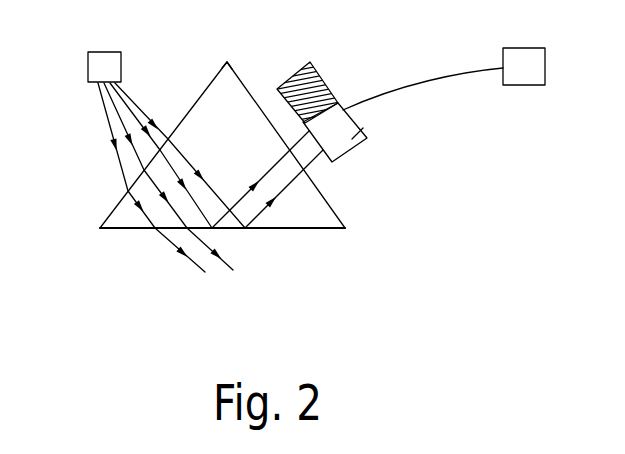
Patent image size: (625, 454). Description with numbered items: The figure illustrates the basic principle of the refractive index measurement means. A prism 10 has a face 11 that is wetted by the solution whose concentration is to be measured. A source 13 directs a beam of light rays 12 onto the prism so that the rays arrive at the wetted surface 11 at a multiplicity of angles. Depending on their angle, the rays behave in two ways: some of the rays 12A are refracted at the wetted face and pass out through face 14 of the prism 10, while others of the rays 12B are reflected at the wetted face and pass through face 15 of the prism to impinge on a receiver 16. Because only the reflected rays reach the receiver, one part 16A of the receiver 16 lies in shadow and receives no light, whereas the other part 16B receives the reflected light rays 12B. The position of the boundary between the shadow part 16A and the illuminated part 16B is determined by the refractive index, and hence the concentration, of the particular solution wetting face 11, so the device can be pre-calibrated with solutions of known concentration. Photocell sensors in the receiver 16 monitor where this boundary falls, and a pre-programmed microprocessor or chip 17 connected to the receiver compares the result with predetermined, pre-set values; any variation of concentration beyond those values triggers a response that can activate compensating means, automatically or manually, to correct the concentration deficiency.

The prism 10 is at (220, 150).
The face 11 is at (211, 83).
The beam of light rays 12 is at (135, 100).
The refracted rays 12A is at (205, 272).
The reflected rays 12B is at (355, 207).
The source 13 is at (100, 52).
The face 14 is at (330, 230).
The face 15 is at (232, 70).
The receiver 16 is at (355, 109).
The shadow part of receiver 16A is at (352, 139).
The illuminated part of receiver 16B is at (316, 93).
The microprocessor or chip 17 is at (512, 49).